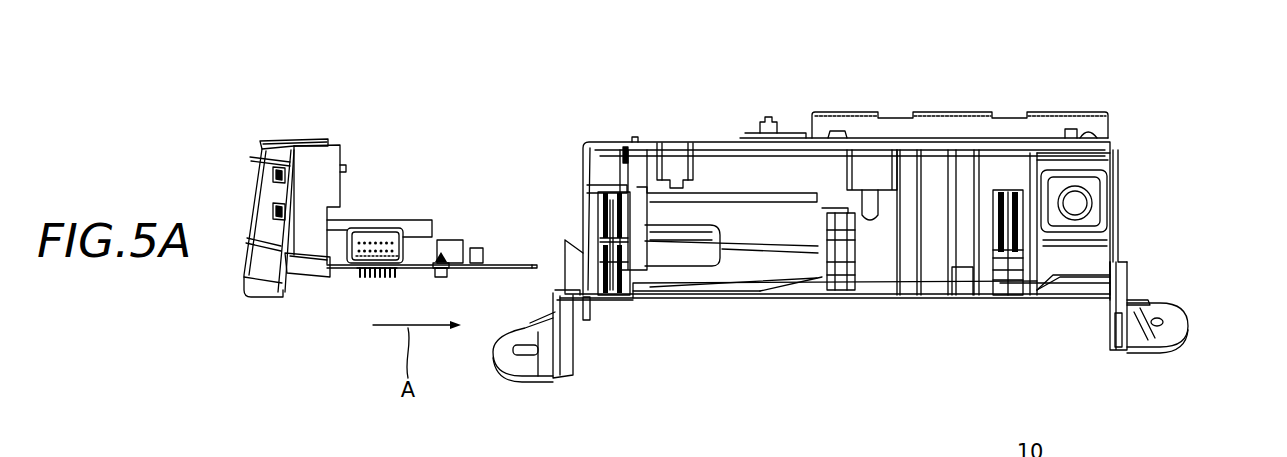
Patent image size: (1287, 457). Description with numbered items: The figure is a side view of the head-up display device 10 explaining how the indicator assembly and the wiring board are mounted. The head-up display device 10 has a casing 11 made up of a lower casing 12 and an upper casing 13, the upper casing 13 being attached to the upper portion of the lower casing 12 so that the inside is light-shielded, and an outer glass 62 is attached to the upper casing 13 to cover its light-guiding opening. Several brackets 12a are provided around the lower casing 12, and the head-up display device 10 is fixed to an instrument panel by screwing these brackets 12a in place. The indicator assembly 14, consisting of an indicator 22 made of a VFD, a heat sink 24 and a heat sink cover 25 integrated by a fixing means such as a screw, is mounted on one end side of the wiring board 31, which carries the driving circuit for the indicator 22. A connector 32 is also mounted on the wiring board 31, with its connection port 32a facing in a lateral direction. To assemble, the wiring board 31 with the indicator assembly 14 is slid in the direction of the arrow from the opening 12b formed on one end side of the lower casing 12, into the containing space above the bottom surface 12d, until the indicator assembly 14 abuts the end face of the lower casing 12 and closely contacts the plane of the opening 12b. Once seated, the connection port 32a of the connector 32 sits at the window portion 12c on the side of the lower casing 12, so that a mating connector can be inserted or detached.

The head-up display device 10 is at (1032, 100).
The casing 11 is at (1118, 213).
The lower casing 12 is at (912, 296).
The bracket 12a is at (517, 365).
The opening 12b is at (580, 172).
The window portion 12c is at (710, 257).
The bottom surface 12d is at (647, 300).
The upper casing 13 is at (1107, 163).
The indicator assembly 14 is at (310, 128).
The indicator 22 is at (322, 182).
The heat sink 24 is at (276, 138).
The heat sink cover 25 is at (248, 198).
The wiring board 31 is at (497, 263).
The connector 32 is at (378, 228).
The connection port 32a is at (358, 255).
The outer glass 62 is at (952, 110).